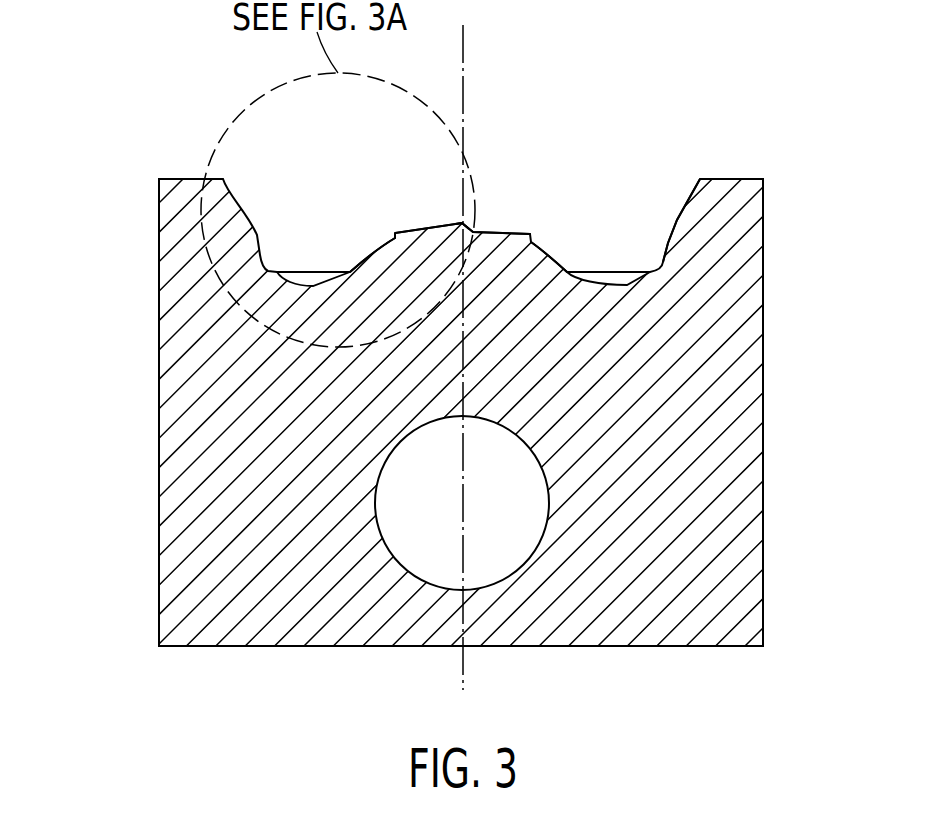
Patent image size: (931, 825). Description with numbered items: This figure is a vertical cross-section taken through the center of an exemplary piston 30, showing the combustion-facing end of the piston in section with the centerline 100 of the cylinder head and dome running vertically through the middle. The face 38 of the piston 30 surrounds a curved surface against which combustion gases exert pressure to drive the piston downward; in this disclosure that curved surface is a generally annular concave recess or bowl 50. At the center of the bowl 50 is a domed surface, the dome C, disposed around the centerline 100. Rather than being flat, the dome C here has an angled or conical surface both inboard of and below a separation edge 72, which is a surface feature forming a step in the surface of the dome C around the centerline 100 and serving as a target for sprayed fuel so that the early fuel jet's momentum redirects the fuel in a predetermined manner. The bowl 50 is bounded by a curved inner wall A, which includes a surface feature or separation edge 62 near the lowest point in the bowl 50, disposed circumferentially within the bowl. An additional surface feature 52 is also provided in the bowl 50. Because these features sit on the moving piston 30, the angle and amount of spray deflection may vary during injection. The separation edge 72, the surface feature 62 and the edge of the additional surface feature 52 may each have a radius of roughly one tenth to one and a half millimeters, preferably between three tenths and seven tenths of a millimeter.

The piston 30 is at (127, 260).
The face 38 is at (727, 179).
The bowl 50 is at (411, 213).
The additional surface feature 52 is at (395, 232).
The separation edge 62 is at (603, 271).
The separation edge 72 is at (393, 238).
The centerline 100 is at (465, 82).
The dome C is at (481, 222).
The curved inner wall A is at (680, 217).